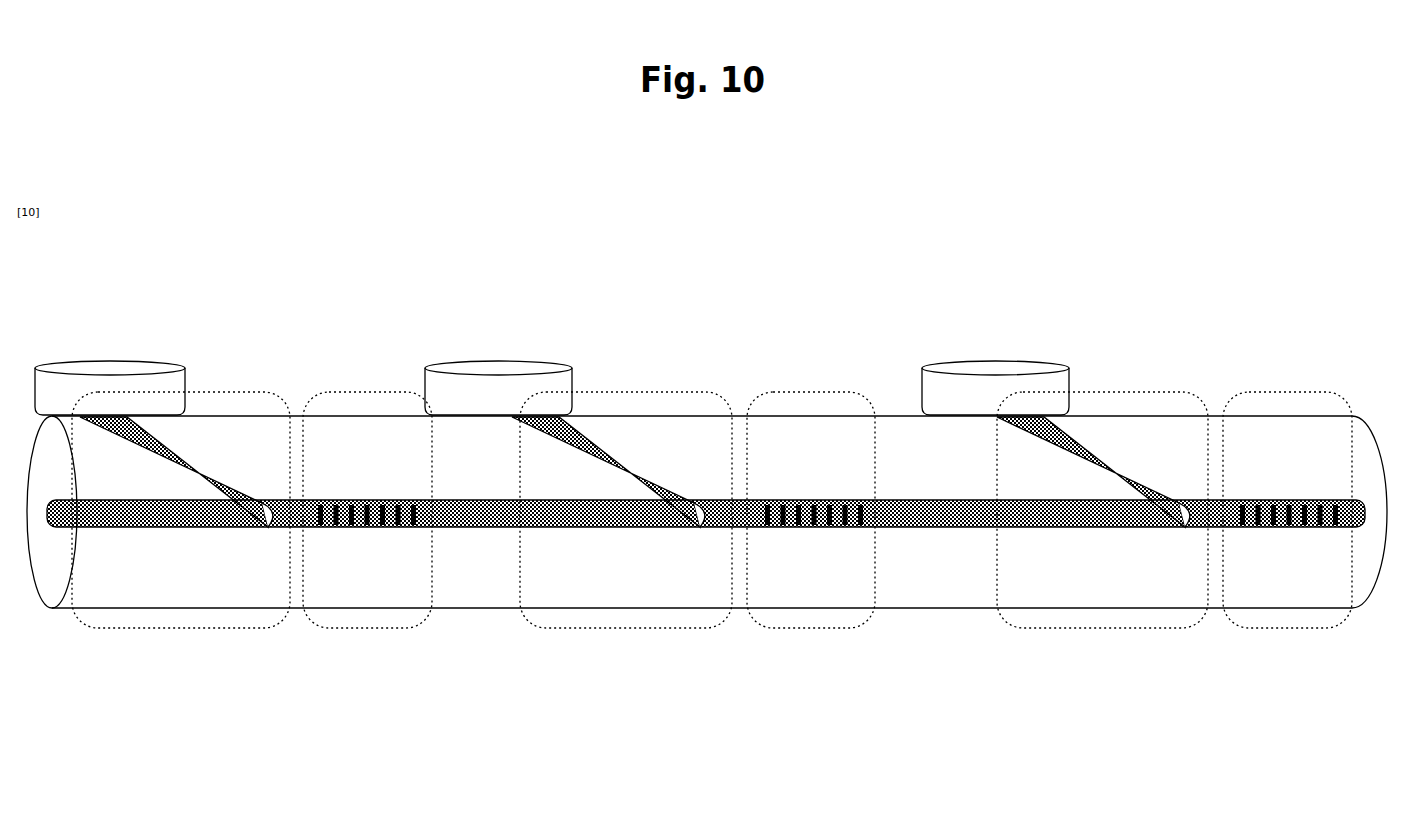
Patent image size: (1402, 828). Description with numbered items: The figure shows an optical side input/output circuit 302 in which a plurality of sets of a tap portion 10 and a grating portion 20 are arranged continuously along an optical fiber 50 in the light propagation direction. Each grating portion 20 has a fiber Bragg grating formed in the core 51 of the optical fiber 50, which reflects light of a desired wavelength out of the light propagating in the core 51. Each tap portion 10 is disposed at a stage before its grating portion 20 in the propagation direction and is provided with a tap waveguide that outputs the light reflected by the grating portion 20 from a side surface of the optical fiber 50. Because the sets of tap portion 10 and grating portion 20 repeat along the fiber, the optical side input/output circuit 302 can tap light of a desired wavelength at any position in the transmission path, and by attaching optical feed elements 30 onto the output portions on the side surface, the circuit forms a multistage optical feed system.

The tap portion 10 is at (193, 632).
The grating portion 20 is at (370, 632).
The optical feed element 30 is at (113, 358).
The optical fiber 50 is at (898, 415).
The core 51 is at (472, 530).
The optical side input/output circuit 302 is at (898, 302).